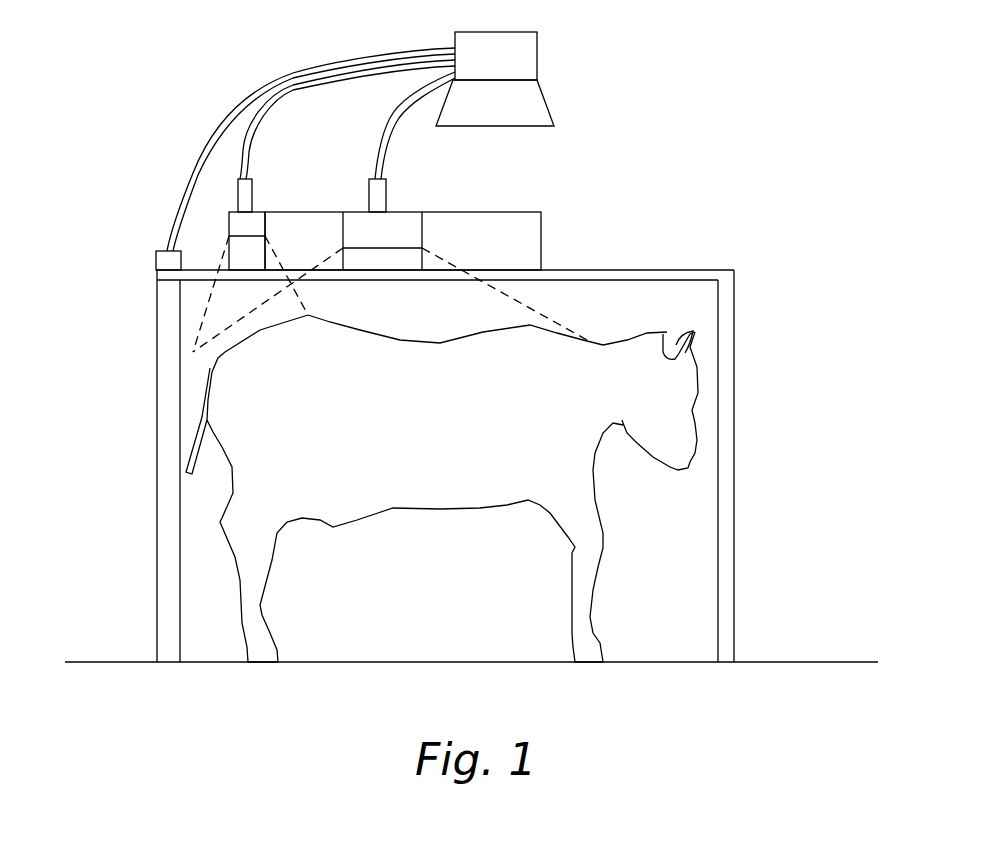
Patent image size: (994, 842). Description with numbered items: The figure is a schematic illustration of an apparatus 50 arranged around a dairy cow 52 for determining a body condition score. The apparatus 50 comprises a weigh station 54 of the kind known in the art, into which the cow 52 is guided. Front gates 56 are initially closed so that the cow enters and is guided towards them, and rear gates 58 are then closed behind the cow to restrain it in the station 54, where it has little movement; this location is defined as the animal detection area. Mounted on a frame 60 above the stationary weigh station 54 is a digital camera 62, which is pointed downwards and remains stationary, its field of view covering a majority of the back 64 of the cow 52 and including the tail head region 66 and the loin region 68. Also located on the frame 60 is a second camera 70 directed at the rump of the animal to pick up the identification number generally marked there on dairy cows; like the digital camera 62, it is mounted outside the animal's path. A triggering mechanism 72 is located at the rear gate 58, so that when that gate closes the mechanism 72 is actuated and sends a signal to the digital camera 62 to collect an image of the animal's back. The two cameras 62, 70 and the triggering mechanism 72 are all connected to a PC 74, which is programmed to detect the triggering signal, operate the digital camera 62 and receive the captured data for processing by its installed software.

The apparatus 50 is at (748, 208).
The dairy cow 52 is at (442, 488).
The weigh station 54 is at (459, 466).
The front gates 56 is at (723, 538).
The rear gates 58 is at (165, 510).
The frame 60 is at (541, 212).
The digital camera 62 is at (385, 237).
The back 64 is at (347, 366).
The tail head region 66 is at (262, 388).
The loin region 68 is at (407, 381).
The second camera 70 is at (250, 225).
The triggering mechanism 72 is at (165, 260).
The PC 74 is at (514, 116).